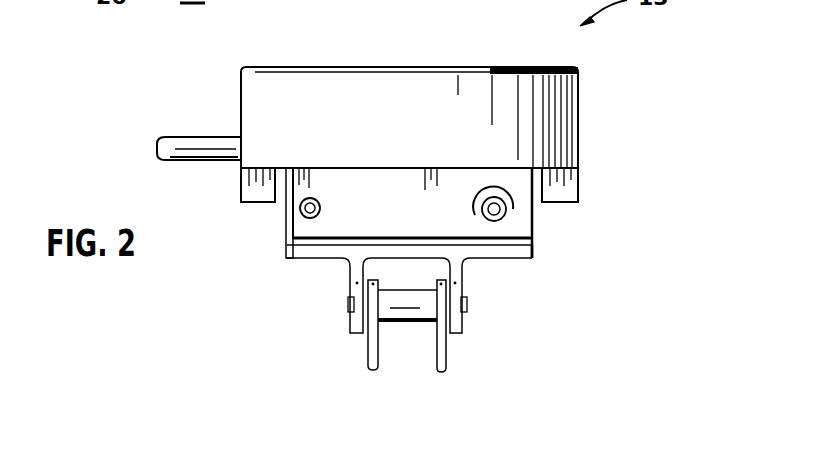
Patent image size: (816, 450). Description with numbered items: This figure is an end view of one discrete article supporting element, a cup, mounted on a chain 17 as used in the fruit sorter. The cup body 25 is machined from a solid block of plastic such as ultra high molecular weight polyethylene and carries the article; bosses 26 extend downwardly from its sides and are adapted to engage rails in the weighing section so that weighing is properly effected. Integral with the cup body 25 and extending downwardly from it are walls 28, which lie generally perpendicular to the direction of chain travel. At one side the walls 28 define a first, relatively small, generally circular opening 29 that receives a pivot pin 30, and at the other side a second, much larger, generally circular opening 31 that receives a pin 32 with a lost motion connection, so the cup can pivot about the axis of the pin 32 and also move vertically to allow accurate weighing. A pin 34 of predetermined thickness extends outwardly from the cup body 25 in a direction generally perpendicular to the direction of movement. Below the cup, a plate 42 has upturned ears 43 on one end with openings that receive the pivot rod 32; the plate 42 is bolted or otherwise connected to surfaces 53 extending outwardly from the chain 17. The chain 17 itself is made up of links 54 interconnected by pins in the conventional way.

The chain 17 is at (451, 331).
The cup body 25 is at (565, 120).
The bosses 26 is at (240, 192).
The walls 28 is at (412, 231).
The first relatively small generally circular opening 29 is at (318, 204).
The pivot pin 30 is at (300, 211).
The second, much larger, generally circular opening 31 is at (474, 205).
The pin 32 is at (500, 209).
The pin 34 is at (183, 146).
The plate 42 is at (285, 248).
The upturned ears 43 is at (503, 228).
The surfaces 53 is at (312, 254).
The links 54 is at (372, 347).